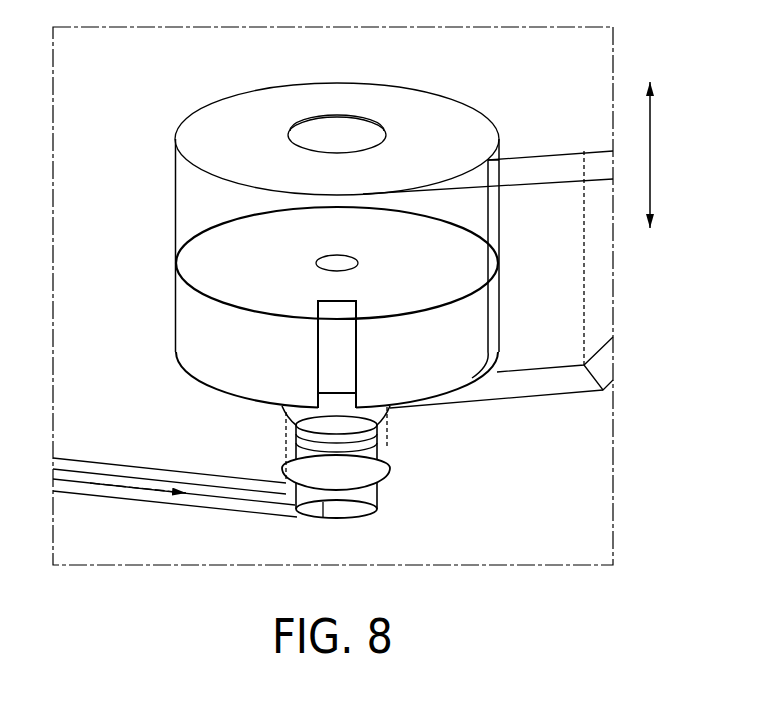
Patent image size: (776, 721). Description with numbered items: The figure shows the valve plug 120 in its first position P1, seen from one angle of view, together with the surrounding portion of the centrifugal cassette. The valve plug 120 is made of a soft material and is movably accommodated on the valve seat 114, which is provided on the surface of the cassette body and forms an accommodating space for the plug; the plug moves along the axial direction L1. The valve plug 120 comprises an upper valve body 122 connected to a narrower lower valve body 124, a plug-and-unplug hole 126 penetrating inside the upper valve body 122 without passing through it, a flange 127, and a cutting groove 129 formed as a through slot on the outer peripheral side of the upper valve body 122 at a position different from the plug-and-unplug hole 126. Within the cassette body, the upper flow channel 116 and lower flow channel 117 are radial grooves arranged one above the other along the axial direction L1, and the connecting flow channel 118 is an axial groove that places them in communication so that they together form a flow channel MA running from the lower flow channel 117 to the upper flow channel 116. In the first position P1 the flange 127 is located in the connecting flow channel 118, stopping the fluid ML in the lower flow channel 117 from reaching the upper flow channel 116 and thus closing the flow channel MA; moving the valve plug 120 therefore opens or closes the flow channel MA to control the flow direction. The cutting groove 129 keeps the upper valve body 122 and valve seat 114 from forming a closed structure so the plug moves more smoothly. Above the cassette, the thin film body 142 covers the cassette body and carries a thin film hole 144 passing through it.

The valve seat 114 is at (176, 200).
The upper flow channel 116 is at (553, 390).
The lower flow channel 117 is at (233, 507).
The connecting flow channel 118 is at (383, 506).
The valve plug 120 is at (216, 262).
The upper valve body 122 is at (187, 331).
The lower valve body 124 is at (297, 440).
The plug-and-unplug hole 126 is at (342, 258).
The flange 127 is at (390, 462).
The cutting groove 129 is at (337, 328).
The thin film body 142 is at (258, 118).
The thin film hole 144 is at (351, 131).
The flow channel MA is at (519, 386).
The first position P1 is at (395, 459).
The axial direction L1 is at (655, 153).
The fluid ML is at (134, 485).